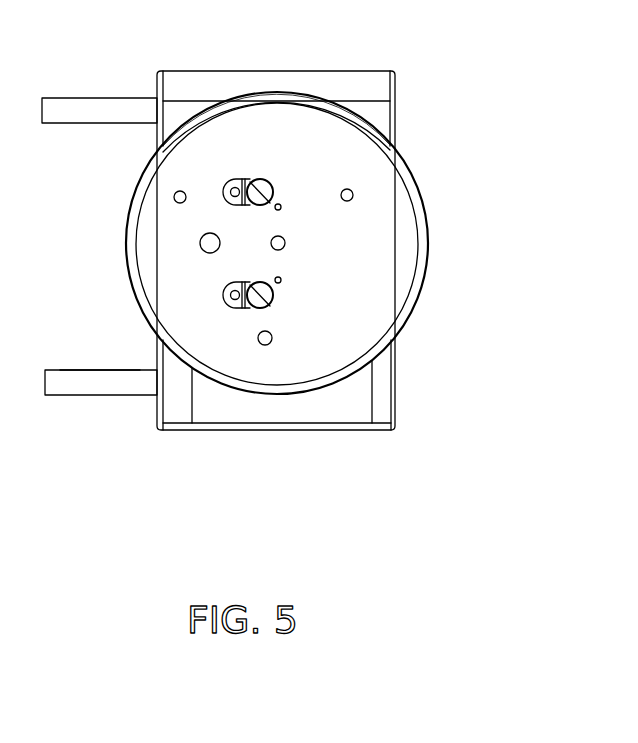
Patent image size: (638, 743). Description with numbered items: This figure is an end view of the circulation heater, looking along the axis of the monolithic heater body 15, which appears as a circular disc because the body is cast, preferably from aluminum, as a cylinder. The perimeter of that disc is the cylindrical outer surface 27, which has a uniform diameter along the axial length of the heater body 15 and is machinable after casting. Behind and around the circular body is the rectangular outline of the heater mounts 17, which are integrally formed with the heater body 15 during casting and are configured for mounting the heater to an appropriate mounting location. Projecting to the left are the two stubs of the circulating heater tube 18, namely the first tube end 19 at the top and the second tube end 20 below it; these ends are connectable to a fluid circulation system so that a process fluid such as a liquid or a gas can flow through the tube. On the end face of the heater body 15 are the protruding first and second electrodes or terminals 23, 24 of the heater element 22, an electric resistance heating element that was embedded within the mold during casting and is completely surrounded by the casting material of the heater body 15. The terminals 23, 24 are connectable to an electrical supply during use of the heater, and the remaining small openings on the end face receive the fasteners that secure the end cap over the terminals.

The heater body 15 is at (407, 253).
The heater mounts 17 is at (322, 417).
The circulating heater tube 18 is at (100, 372).
The first tube end 19 is at (74, 108).
The second tube end 20 is at (85, 387).
The heater element 22 is at (222, 184).
The first electrode or terminal 23 is at (277, 181).
The second electrode or terminal 24 is at (273, 300).
The cylindrical outer surface 27 is at (425, 282).